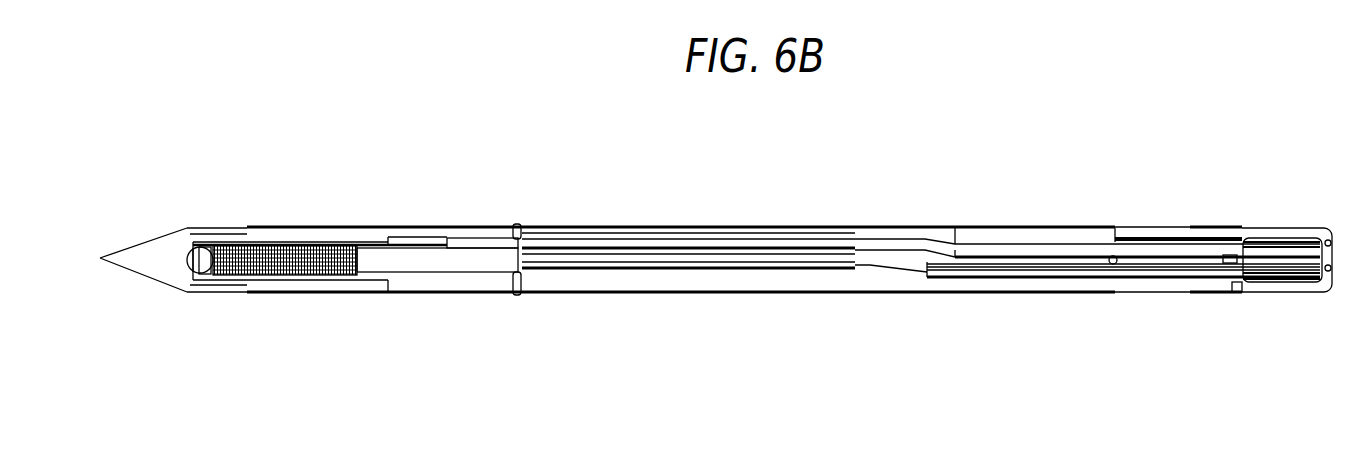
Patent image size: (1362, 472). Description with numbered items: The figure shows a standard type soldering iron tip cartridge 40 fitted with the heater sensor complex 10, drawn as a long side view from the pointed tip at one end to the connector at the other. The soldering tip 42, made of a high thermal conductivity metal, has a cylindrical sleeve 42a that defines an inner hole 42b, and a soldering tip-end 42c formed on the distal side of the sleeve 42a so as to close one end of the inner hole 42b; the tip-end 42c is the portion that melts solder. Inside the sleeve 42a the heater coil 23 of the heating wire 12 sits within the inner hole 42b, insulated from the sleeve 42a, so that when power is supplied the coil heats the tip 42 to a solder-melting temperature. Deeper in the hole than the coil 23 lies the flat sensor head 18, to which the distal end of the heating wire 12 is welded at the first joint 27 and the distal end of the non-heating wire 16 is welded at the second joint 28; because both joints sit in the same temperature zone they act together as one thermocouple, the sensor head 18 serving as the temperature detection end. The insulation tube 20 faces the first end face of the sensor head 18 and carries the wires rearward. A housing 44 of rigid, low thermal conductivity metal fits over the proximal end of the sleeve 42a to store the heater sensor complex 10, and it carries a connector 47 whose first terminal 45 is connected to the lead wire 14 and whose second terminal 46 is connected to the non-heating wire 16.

The heater sensor complex 10 is at (583, 274).
The heating wire 12 is at (425, 244).
The lead wire 14 is at (880, 227).
The non-heating wire 16 is at (870, 267).
The sensor head 18 is at (193, 273).
The insulation tube 20 is at (492, 274).
The heater coil 23 is at (280, 278).
The first joint 27 is at (205, 248).
The second joint 28 is at (223, 279).
The tip cartridge 40 is at (744, 249).
The soldering tip 42 is at (197, 208).
The cylindrical sleeve 42a is at (230, 227).
The inner hole 42b is at (392, 245).
The soldering tip-end 42c is at (143, 242).
The housing 44 is at (622, 227).
The first terminal 45 is at (1182, 227).
The second terminal 46 is at (1248, 294).
The connector 47 is at (1277, 225).